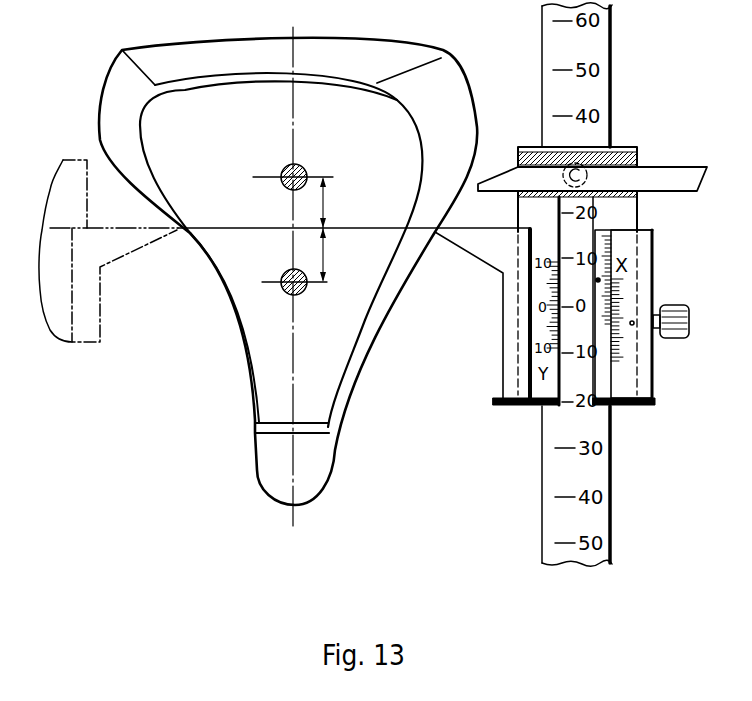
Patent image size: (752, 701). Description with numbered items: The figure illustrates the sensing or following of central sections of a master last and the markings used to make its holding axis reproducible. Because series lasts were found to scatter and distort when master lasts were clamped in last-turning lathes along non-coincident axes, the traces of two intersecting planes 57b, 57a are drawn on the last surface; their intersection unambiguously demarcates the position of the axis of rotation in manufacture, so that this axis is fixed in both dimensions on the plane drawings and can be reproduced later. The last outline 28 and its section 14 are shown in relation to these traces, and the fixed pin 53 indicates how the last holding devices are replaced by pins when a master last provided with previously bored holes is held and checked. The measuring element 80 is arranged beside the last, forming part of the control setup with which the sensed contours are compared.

The saddle seat shell 28 is at (220, 96).
The seat rim 14 is at (287, 231).
The intersecting plane 57b is at (297, 48).
The intersecting plane 57a is at (358, 228).
The fixed pin 53 is at (290, 163).
The measuring blade 80 is at (590, 173).